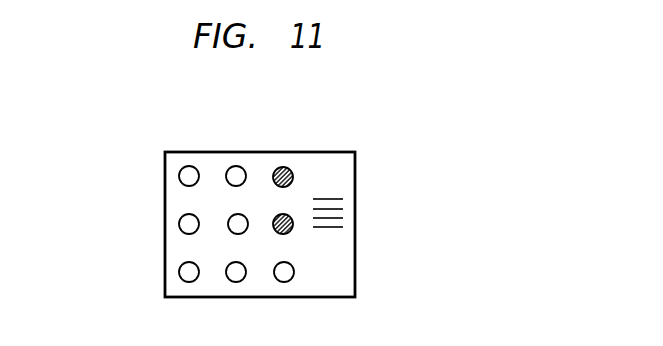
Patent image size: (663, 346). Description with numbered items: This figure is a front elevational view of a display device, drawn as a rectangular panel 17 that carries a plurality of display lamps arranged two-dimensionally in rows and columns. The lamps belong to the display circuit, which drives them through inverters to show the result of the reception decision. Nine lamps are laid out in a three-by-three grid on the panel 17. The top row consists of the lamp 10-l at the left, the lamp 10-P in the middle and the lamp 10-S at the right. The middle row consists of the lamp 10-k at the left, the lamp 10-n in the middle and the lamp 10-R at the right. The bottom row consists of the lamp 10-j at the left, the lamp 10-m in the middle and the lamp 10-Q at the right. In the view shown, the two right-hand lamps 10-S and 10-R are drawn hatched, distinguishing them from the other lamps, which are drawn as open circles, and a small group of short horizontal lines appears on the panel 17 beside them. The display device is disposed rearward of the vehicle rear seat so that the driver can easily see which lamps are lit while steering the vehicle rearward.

The plate 17 is at (186, 288).
The lamp 10-l is at (180, 176).
The lamp 10-k is at (180, 224).
The lamp 10-j is at (180, 271).
The lamp 10-P is at (237, 174).
The lamp 10-n is at (243, 218).
The lamp 10-S is at (292, 167).
The lamp 10-R is at (291, 231).
The lamp 10-m is at (237, 280).
The lamp 10-Q is at (287, 281).